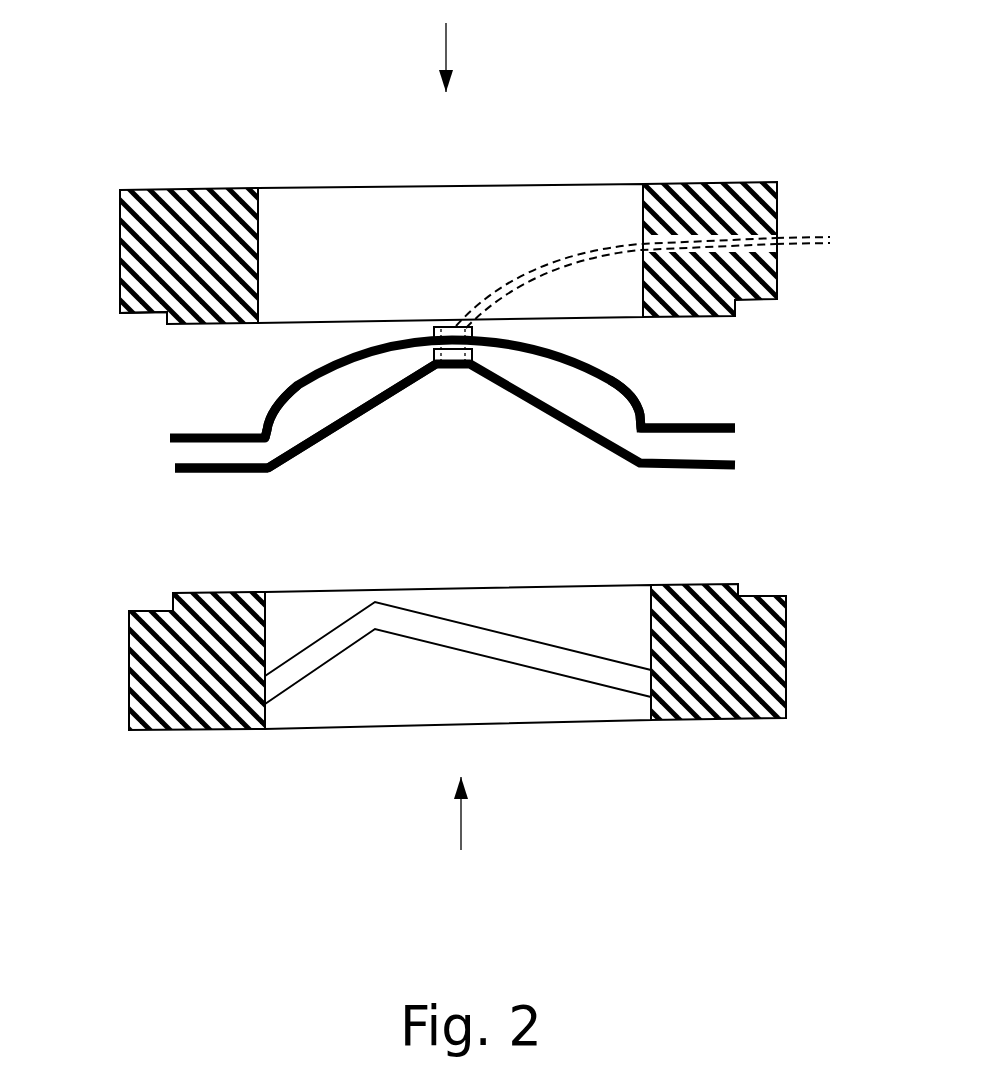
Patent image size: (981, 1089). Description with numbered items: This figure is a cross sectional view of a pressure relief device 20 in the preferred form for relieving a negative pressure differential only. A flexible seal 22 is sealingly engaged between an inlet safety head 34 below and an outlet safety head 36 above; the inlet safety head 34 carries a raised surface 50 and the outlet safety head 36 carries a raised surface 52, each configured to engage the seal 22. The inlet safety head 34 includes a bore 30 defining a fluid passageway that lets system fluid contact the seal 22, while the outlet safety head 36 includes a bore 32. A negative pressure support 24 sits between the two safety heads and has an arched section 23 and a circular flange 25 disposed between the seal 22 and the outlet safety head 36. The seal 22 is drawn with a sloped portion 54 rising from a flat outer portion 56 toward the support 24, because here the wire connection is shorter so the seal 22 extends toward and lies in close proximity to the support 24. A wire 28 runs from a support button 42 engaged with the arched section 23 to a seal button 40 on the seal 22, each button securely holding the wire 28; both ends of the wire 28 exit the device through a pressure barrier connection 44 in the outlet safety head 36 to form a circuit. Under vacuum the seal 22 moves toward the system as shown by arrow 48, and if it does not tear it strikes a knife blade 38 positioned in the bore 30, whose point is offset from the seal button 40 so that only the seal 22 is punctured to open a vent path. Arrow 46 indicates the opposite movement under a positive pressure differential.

The pressure relief device 20 is at (206, 116).
The arrow 48 is at (446, 45).
The pressure barrier connection 44 is at (748, 233).
The outlet safety head 36 is at (405, 253).
The wire 28 is at (797, 246).
The bore 32 is at (385, 240).
The support button 42 is at (440, 328).
The negative pressure support 24 is at (622, 359).
The raised surface 52 is at (210, 325).
The arched section 23 is at (280, 407).
The circular flange 25 is at (668, 425).
The seal button 40 is at (452, 365).
The lower diaphragm sloped portion 54 is at (397, 392).
The seal 22 is at (553, 451).
The lower diaphragm flat end 56 is at (213, 473).
The raised surface 50 is at (193, 593).
The knife blade 38 is at (502, 652).
The inlet safety head 34 is at (160, 668).
The bore 30 is at (472, 709).
The arrow 46 is at (461, 828).